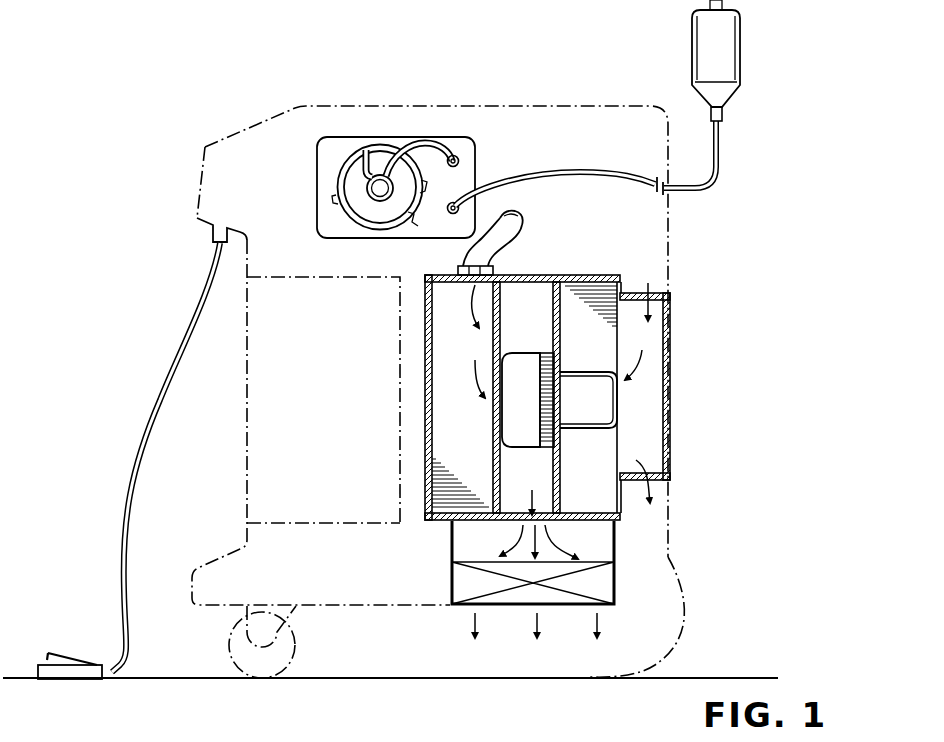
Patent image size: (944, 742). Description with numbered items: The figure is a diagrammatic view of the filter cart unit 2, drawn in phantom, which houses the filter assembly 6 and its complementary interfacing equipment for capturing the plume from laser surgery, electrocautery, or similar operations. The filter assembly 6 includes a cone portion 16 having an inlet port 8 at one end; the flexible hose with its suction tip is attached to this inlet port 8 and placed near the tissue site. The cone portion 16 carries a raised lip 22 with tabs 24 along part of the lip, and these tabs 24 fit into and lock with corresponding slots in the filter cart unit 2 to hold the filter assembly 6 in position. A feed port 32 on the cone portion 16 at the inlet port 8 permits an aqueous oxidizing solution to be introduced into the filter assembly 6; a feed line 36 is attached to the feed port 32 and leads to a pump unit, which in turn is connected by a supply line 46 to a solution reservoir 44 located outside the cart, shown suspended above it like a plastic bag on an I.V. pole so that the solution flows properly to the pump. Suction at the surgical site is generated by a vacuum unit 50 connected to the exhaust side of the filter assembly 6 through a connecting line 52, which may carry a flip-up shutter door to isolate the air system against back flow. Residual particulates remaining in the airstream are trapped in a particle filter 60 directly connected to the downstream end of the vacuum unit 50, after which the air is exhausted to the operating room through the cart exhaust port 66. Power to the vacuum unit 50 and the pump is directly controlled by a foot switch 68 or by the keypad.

The filter cart unit 2 is at (791, 238).
The filter assembly 6 is at (336, 178).
The inlet port 8 is at (366, 190).
The cone portion 16 is at (358, 200).
The raised lip 22 is at (426, 189).
The tabs 24 is at (415, 215).
The feed port 32 is at (370, 150).
The feed line 36 is at (417, 143).
The solution reservoir 44 is at (738, 56).
The supply line 46 is at (613, 171).
The vacuum unit 50 is at (583, 380).
The connecting line 52 is at (522, 240).
The particle filter 60 is at (470, 583).
The cart exhaust port 66 is at (510, 607).
The foot switch 68 is at (72, 655).